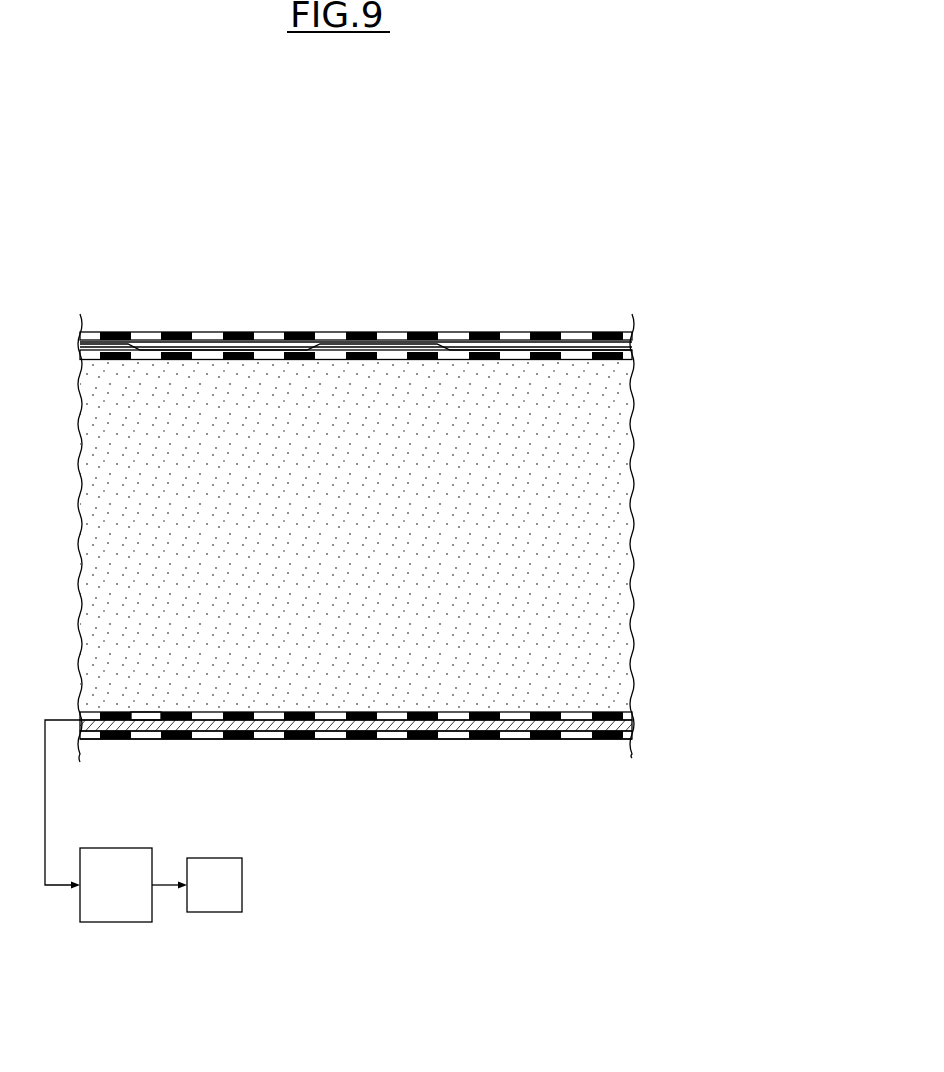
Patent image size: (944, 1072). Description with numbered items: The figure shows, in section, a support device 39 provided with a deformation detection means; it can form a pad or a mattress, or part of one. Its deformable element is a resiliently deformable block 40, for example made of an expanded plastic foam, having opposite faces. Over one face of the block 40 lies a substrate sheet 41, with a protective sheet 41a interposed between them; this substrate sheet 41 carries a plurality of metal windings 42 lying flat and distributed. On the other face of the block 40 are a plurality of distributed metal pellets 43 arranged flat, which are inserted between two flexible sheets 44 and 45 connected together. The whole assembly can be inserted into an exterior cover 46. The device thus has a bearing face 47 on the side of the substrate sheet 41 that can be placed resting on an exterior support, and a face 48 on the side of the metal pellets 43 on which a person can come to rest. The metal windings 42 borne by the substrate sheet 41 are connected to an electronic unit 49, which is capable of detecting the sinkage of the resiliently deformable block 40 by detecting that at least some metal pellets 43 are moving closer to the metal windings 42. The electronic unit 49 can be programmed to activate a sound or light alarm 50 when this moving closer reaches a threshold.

The support device 39 is at (609, 273).
The resiliently deformable block 40 is at (632, 509).
The substrate sheet 41 is at (632, 723).
The protective sheet 41a is at (143, 721).
The metal windings 42 is at (583, 710).
The metal pellets 43 is at (395, 348).
The flexible sheet 44 is at (580, 358).
The flexible sheet 45 is at (510, 349).
The exterior cover 46 is at (147, 333).
The bearing face 47 is at (276, 750).
The face 48 is at (245, 320).
The electronic unit 49 is at (116, 885).
The sound or light alarm 50 is at (214, 885).